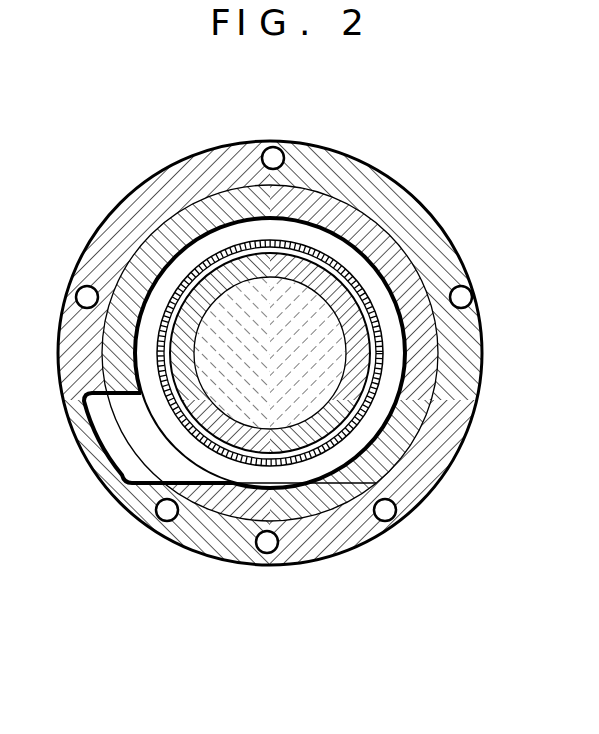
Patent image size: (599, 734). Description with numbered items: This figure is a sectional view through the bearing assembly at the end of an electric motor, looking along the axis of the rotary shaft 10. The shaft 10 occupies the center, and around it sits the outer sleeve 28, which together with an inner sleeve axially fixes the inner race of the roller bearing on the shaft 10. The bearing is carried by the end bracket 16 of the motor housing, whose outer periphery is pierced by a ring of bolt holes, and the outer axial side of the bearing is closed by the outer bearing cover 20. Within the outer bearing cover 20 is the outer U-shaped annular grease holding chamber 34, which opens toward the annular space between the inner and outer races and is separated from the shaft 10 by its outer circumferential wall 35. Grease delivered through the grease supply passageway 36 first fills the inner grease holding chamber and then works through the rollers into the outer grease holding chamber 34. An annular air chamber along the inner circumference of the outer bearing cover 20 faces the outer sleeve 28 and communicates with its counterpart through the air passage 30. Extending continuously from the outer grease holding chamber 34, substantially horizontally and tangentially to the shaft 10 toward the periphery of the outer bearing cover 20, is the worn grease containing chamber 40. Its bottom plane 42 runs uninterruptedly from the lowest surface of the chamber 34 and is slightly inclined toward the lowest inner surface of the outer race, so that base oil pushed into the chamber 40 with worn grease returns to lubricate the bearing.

The rotary shaft 10 is at (318, 395).
The end bracket 16 is at (431, 244).
The outer bearing cover 20 is at (131, 261).
The outer sleeve 28 is at (360, 370).
The air passage 30 is at (268, 148).
The outer grease holding chamber 34 is at (263, 485).
The outer circumferential wall 35 is at (196, 266).
The grease supply passageway 36 is at (270, 553).
The worn grease containing chamber 40 is at (103, 424).
The bottom plane 42 is at (128, 478).